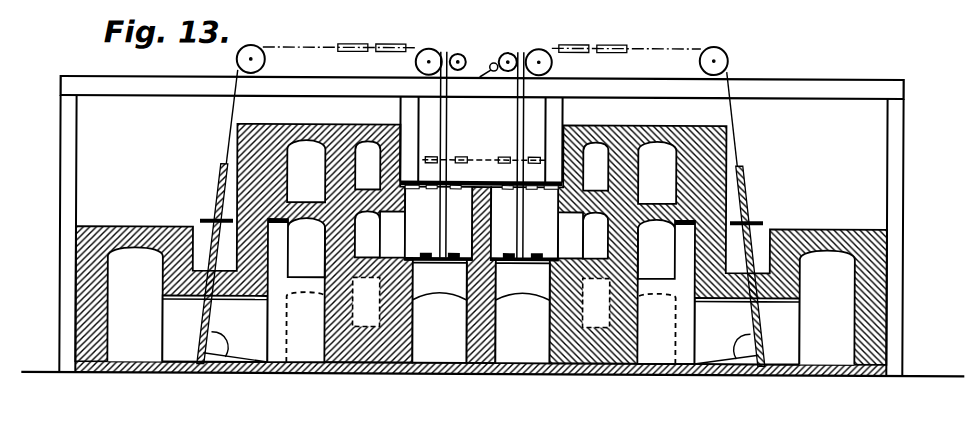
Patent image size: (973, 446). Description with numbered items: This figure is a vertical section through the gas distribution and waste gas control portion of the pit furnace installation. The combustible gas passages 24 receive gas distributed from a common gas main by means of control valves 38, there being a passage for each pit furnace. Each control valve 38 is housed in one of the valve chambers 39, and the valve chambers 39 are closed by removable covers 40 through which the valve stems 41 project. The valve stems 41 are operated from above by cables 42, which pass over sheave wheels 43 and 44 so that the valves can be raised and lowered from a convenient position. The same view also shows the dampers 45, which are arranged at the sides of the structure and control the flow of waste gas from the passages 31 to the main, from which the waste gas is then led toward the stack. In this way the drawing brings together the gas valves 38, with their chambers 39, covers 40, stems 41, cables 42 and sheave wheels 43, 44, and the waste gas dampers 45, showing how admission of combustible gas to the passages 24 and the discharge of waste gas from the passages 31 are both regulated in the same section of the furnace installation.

The combustible gas passages 24 is at (482, 199).
The passages 31 is at (827, 308).
The control valves 38 is at (449, 262).
The valve chambers 39 is at (481, 224).
The removable covers 40 is at (463, 181).
The valve stems 41 is at (458, 150).
The cables 42 is at (443, 113).
The sheave wheels 43 is at (455, 51).
The sheave wheels 44 is at (395, 46).
The dampers 45 is at (208, 372).